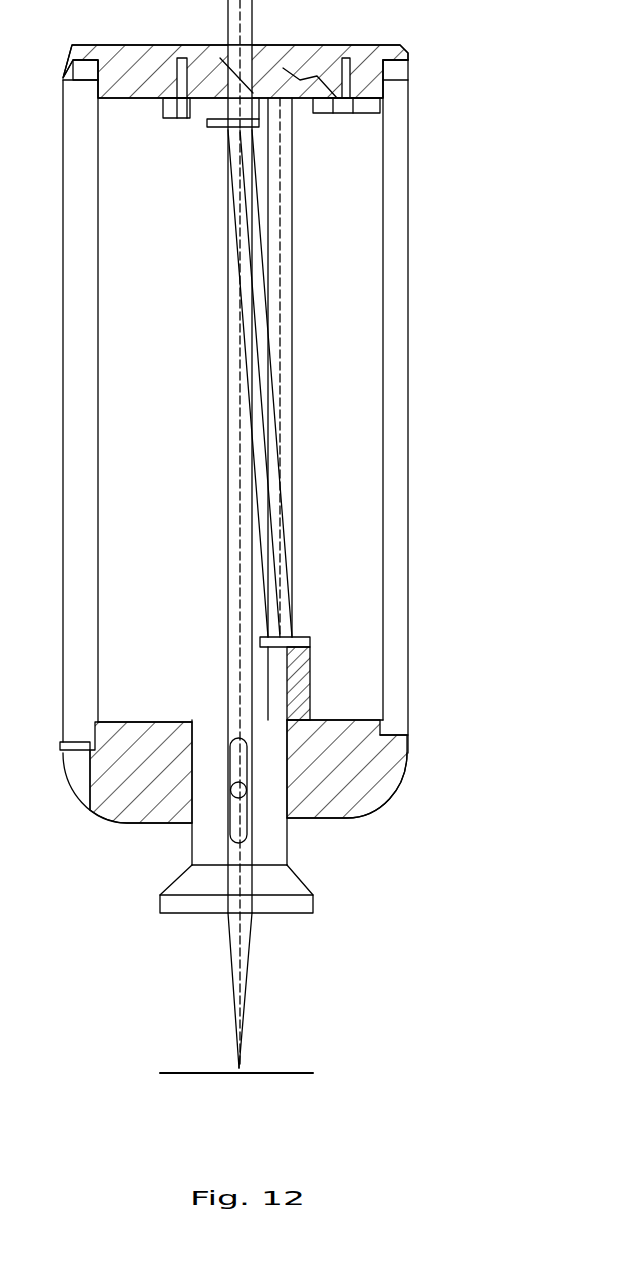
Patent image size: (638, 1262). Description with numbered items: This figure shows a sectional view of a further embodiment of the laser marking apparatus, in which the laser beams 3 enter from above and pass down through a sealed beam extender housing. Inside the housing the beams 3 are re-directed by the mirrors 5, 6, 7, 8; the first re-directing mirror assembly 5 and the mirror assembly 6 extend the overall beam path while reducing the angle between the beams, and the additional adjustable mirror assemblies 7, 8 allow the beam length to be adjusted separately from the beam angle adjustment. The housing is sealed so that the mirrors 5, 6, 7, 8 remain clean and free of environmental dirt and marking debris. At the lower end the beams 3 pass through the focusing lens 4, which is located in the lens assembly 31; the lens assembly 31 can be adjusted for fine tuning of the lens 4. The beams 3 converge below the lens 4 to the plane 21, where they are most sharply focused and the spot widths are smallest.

The laser beams 3 is at (255, 15).
The first re-directing mirror assembly 5 is at (255, 73).
The mirror assembly 6 is at (300, 84).
The adjustable mirror assembly 8 is at (258, 124).
The adjustable mirror assembly 7 is at (310, 632).
The lens assembly 31 is at (268, 750).
The lens 4 is at (262, 903).
The plane 21 is at (293, 1068).